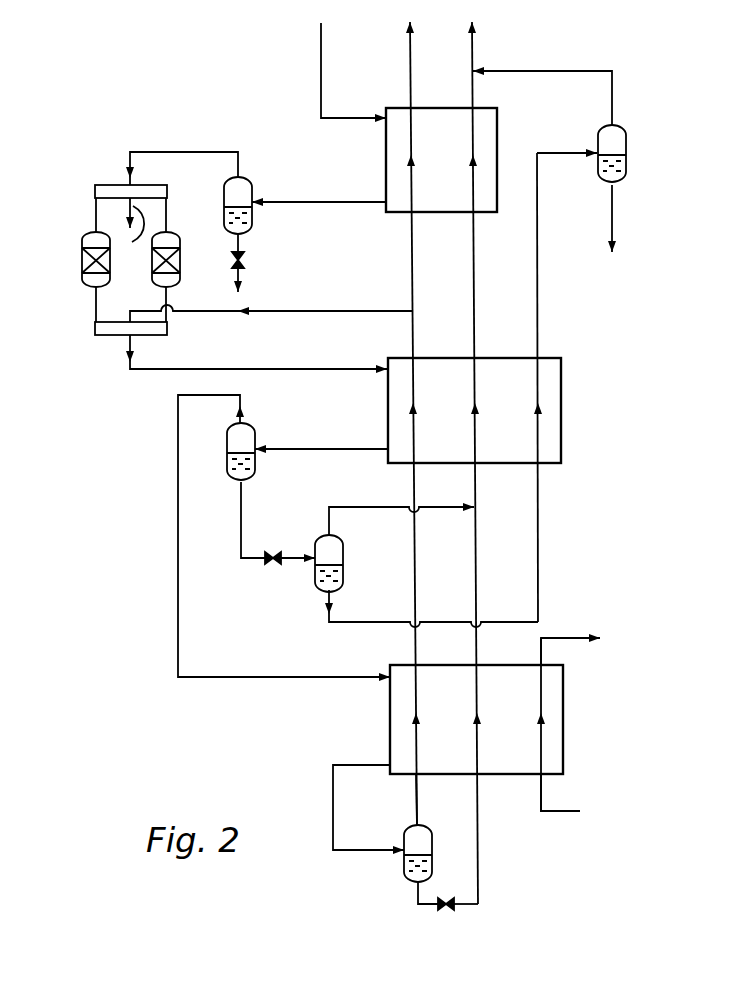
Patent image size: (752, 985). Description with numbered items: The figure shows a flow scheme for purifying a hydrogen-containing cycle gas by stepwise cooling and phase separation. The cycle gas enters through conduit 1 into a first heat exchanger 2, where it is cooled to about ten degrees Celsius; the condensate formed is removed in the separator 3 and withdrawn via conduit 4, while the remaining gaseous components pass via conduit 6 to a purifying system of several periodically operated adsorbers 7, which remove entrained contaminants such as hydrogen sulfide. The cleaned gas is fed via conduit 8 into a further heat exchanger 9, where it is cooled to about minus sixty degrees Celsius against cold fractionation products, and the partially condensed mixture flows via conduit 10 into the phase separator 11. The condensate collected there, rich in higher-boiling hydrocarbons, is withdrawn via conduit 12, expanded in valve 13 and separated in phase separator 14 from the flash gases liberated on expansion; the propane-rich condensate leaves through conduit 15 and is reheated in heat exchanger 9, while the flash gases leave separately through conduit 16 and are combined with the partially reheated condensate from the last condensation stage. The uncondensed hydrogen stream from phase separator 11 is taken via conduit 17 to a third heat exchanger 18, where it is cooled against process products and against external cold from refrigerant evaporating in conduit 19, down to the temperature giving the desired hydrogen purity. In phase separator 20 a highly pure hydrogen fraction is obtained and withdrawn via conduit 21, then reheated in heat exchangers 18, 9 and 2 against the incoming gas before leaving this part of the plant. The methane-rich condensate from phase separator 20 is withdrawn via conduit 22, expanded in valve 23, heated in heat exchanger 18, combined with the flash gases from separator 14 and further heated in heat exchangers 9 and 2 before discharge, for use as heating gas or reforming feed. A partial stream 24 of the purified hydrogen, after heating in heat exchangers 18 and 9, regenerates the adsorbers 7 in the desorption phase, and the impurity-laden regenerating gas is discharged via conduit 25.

The conduit 1 is at (321, 68).
The first heat exchanger 2 is at (497, 128).
The separator 3 is at (249, 178).
The conduit 4 is at (244, 280).
The conduit 6 is at (165, 152).
The adsorbers 7 is at (72, 237).
The conduit 8 is at (153, 371).
The further heat exchanger 9 is at (561, 382).
The conduit 10 is at (298, 449).
The phase separator 11 is at (227, 447).
The conduit 12 is at (243, 522).
The valve 13 is at (277, 565).
The phase separator 14 is at (343, 553).
The conduit 15 is at (359, 623).
The conduit 16 is at (358, 505).
The conduit 17 is at (178, 503).
The third heat exchanger 18 is at (563, 735).
The conduit 19 is at (564, 812).
The phase separator 20 is at (432, 848).
The conduit 21 is at (416, 805).
The conduit 22 is at (414, 892).
The valve 23 is at (448, 913).
The partial stream 24 is at (330, 311).
The conduit 25 is at (132, 235).